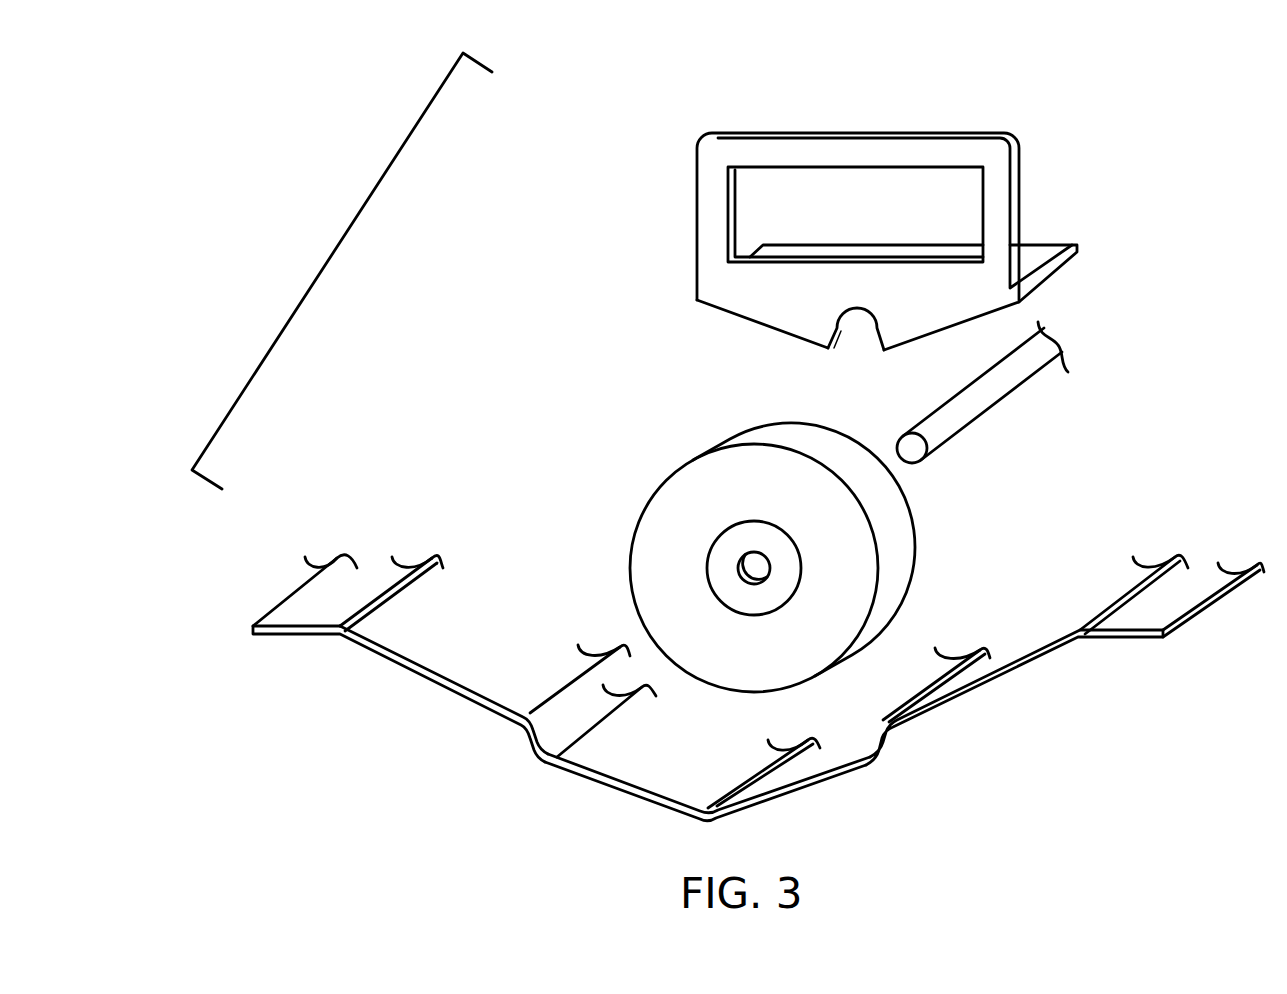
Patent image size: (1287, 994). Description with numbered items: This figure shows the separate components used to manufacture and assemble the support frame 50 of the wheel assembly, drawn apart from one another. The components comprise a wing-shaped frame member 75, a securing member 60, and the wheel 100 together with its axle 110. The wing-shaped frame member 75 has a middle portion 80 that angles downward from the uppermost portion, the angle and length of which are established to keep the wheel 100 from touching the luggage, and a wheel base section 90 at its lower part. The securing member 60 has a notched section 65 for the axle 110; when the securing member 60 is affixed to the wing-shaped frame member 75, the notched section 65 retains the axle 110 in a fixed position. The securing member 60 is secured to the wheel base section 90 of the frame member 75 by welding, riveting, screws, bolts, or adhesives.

The frame 50 is at (342, 271).
The securing member 60 is at (1003, 160).
The notched section 65 is at (858, 350).
The wing-shaped frame member 75 is at (758, 691).
The middle portion of the frame 80 is at (1000, 680).
The wheel base section 90 is at (832, 785).
The wheel 100 is at (900, 562).
The axle 110 is at (1007, 388).